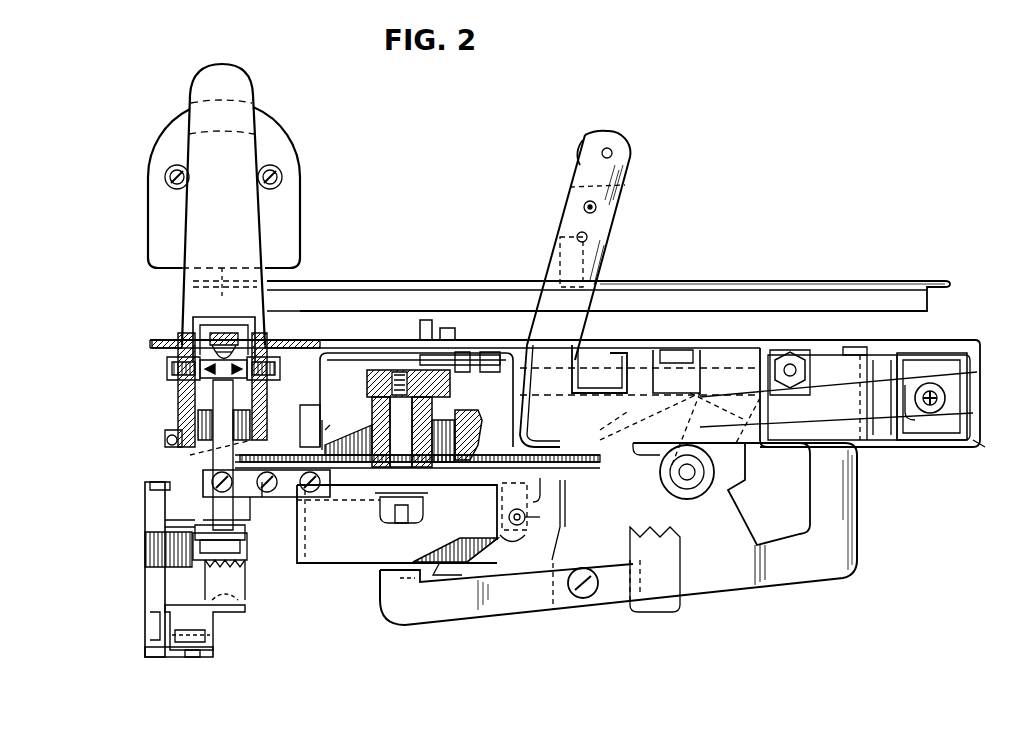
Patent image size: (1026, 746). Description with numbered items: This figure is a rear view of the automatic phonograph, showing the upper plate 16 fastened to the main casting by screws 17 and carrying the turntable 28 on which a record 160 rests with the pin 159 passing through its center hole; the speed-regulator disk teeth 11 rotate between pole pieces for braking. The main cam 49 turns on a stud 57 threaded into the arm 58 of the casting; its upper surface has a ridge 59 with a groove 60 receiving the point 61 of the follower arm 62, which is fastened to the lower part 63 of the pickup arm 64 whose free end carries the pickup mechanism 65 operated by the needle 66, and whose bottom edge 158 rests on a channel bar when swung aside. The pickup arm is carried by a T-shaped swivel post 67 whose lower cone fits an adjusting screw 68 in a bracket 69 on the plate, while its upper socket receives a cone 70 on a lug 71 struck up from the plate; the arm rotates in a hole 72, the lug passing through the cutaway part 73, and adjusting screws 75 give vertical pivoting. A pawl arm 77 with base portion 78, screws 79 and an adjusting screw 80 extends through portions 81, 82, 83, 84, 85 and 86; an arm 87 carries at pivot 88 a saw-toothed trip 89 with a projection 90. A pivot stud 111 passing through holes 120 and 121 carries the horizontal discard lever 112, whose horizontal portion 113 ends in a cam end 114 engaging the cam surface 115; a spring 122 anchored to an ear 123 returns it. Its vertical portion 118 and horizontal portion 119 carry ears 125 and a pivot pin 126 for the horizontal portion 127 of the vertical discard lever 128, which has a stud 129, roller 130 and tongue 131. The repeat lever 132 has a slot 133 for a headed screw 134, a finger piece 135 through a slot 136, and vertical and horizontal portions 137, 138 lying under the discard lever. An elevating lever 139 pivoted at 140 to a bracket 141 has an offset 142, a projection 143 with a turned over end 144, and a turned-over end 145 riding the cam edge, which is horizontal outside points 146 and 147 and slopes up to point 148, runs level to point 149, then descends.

The teeth 11 is at (740, 535).
The upper plate 16 is at (752, 341).
The screws 17 is at (446, 330).
The turntable 28 is at (798, 290).
The cam 49 is at (350, 564).
The stud 57 is at (395, 413).
The arm 58 is at (368, 384).
The ridge 59 is at (455, 440).
The groove 60 is at (470, 412).
The point 61 is at (322, 440).
The follower arm 62 is at (178, 416).
The lower part 63 is at (175, 402).
The pickup arm 64 is at (185, 222).
The pickup mechanism 65 is at (155, 158).
The needle 66 is at (220, 278).
The swivel post 67 is at (165, 437).
The adjusting screw 68 is at (246, 572).
The bracket 69 is at (290, 510).
The cone 70 is at (240, 352).
The lug 71 is at (245, 335).
The hole 72 is at (178, 340).
The cutaway part 73 is at (200, 317).
The adjusting screws 75 is at (167, 373).
The pawl arm 77 is at (192, 658).
The base portion 78 is at (325, 488).
The screws 79 is at (212, 482).
The screw 80 is at (263, 498).
The downward portion 81 is at (245, 590).
The horizontal portion 82 is at (170, 608).
The downward portion 83 is at (208, 636).
The horizontal portion 84 is at (158, 658).
The vertical portion 85 is at (158, 630).
The reverse horizontal portion 86 is at (145, 487).
The arm 87 is at (165, 523).
The pivot 88 is at (250, 548).
The saw-toothed trip 89 is at (150, 573).
The projection 90 is at (197, 525).
The pivot stud 111 is at (870, 367).
The horizontal discard lever 112 is at (988, 447).
The horizontal portion 113 is at (600, 450).
The cam end 114 is at (380, 505).
The cam surface 115 is at (541, 480).
The vertical portion 118 is at (972, 362).
The horizontal portion 119 is at (935, 350).
The hole 120 is at (855, 346).
The hole 121 is at (857, 426).
The spring 122 is at (525, 520).
The ear 123 is at (500, 500).
The ears 125 is at (912, 385).
The pivot pin 126 is at (945, 403).
The horizontal portion 127 is at (722, 397).
The vertical discard lever 128 is at (630, 187).
The stud 129 is at (613, 152).
The roller 130 is at (582, 143).
The tongue 131 is at (580, 188).
The repeat lever 132 is at (468, 350).
The slot 133 is at (497, 350).
The headed screw 134 is at (440, 360).
The finger piece 135 is at (425, 322).
The slot 136 is at (395, 350).
The vertical portion 137 is at (572, 382).
The horizontal portion 138 is at (530, 430).
The elevating lever 139 is at (716, 590).
The pivot 140 is at (578, 592).
The bracket 141 is at (598, 600).
The offset 142 is at (765, 573).
The projection 143 is at (858, 548).
The turned over end 144 is at (815, 420).
The turned-over end 145 is at (381, 598).
The point 146 is at (412, 560).
The point 147 is at (470, 561).
The point 148 is at (453, 577).
The point 149 is at (505, 537).
The bottom edge 158 is at (195, 455).
The pin 159 is at (605, 255).
The record 160 is at (920, 281).